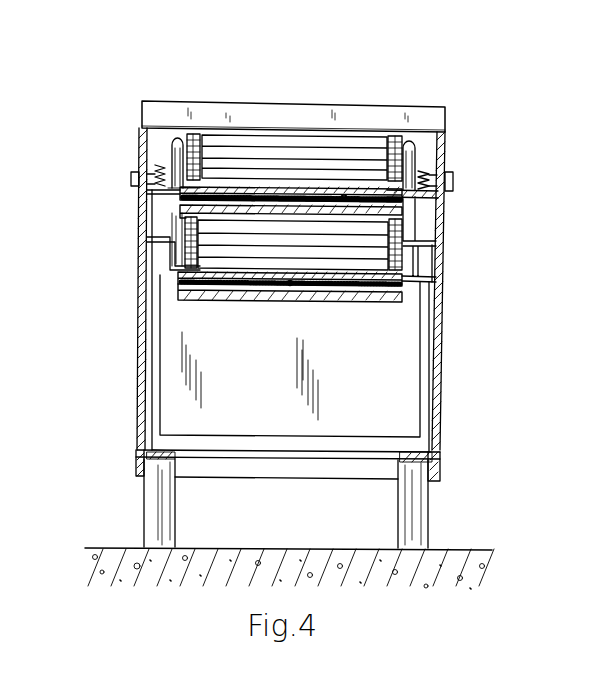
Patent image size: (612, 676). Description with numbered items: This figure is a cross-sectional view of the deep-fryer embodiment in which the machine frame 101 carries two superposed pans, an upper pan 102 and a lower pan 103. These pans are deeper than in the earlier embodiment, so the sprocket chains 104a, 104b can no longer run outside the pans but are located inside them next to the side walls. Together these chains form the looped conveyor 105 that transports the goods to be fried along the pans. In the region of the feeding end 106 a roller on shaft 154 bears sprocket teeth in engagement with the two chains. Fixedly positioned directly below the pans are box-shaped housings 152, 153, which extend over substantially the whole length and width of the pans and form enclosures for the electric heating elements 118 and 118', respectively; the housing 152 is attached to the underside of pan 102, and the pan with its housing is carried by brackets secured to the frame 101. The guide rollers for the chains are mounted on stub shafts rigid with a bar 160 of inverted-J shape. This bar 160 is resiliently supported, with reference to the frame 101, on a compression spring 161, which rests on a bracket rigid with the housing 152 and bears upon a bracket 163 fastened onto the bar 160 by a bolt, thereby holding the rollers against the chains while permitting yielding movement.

The machine frame 101 is at (133, 341).
The pan 102 is at (248, 187).
The pan 103 is at (230, 292).
The sprocket chain 104a is at (406, 138).
The sprocket chain 104b is at (180, 136).
The looped conveyor 105 is at (305, 153).
The feeding end 106 is at (207, 101).
The electric heating element 118 is at (353, 122).
The electric heating element 118' is at (284, 319).
The housing 152 is at (362, 207).
The housing 153 is at (343, 287).
The shaft 154 is at (446, 173).
The bar 160 is at (151, 214).
The compression spring 161 is at (430, 191).
The bracket 163 is at (153, 168).